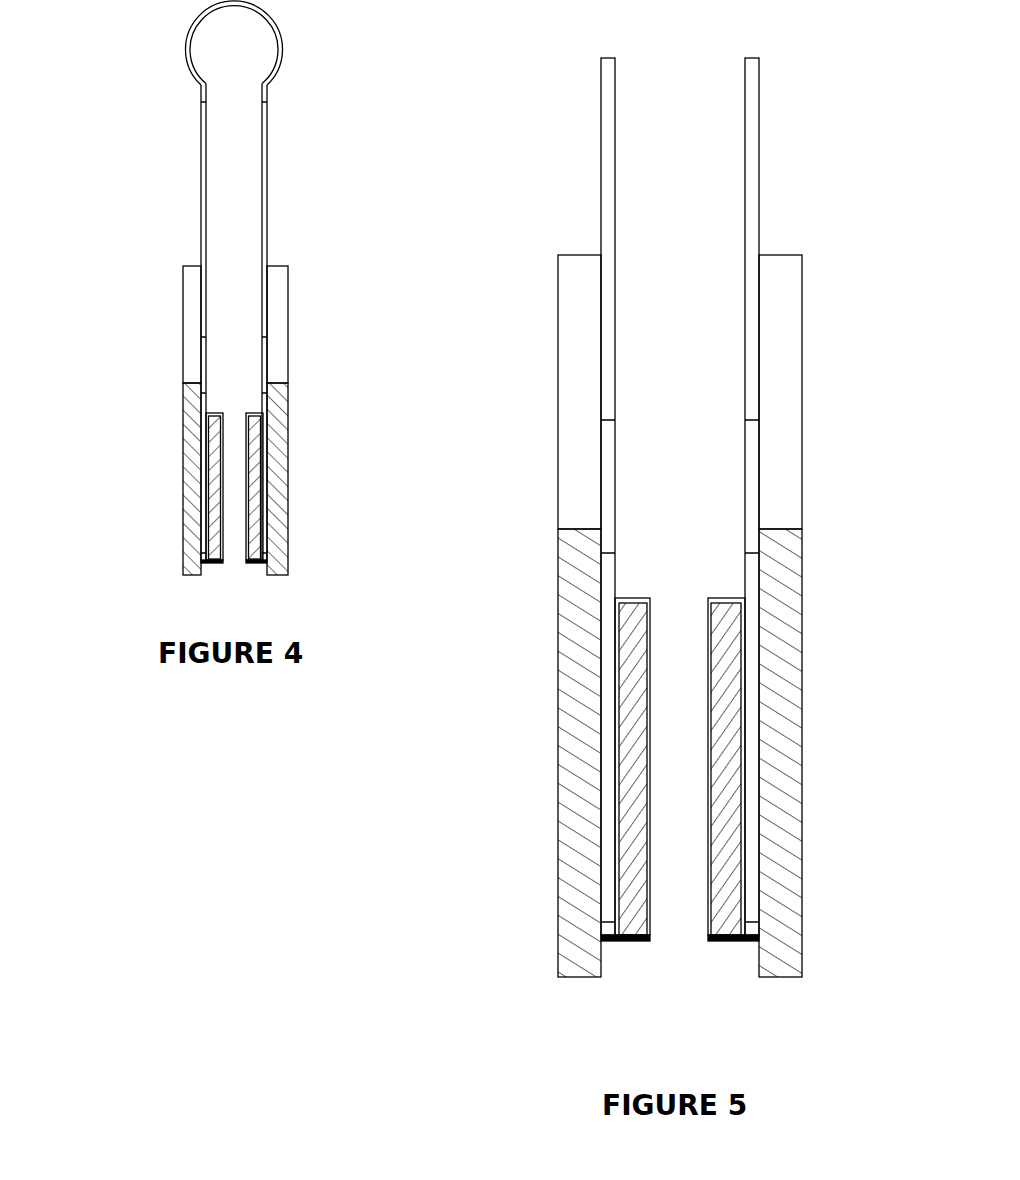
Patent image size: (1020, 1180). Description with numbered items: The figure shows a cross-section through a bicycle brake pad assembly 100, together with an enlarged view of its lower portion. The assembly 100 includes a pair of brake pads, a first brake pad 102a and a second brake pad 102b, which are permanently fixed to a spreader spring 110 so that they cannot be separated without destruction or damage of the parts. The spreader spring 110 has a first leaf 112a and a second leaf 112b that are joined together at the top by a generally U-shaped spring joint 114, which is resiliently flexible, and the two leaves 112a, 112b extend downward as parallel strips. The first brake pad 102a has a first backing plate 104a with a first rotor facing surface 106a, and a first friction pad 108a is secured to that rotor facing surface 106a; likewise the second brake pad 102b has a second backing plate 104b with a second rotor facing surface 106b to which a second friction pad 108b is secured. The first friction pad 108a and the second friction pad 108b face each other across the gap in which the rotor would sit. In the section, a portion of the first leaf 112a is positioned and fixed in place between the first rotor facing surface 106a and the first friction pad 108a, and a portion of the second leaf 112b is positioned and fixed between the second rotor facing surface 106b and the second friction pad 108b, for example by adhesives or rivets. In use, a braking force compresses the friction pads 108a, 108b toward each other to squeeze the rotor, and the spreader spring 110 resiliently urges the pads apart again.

In FIG. 4, the brake pad assembly 100 is at (238, 304).
In FIG. 4, the first brake pad 102a is at (289, 450).
In FIG. 5, the first brake pad 102a is at (780, 753).
In FIG. 4, the second brake pad 102b is at (183, 457).
In FIG. 5, the second brake pad 102b is at (579, 753).
In FIG. 4, the first backing plate 104a is at (280, 330).
In FIG. 5, the first backing plate 104a is at (770, 396).
In FIG. 4, the second backing plate 104b is at (190, 330).
In FIG. 5, the second backing plate 104b is at (607, 241).
In FIG. 4, the first rotor facing surface 106a is at (268, 573).
In FIG. 5, the first rotor facing surface 106a is at (757, 965).
In FIG. 4, the second rotor facing surface 106b is at (200, 572).
In FIG. 5, the second rotor facing surface 106b is at (603, 963).
In FIG. 4, the first friction pad 108a is at (258, 520).
In FIG. 5, the first friction pad 108a is at (725, 780).
In FIG. 4, the second friction pad 108b is at (215, 513).
In FIG. 5, the second friction pad 108b is at (632, 830).
In FIG. 4, the spreader spring 110 is at (256, 280).
In FIG. 4, the first leaf 112a is at (268, 230).
In FIG. 5, the first leaf 112a is at (753, 135).
In FIG. 4, the second leaf 112b is at (200, 152).
In FIG. 5, the second leaf 112b is at (598, 153).
In FIG. 4, the spring joint 114 is at (266, 12).